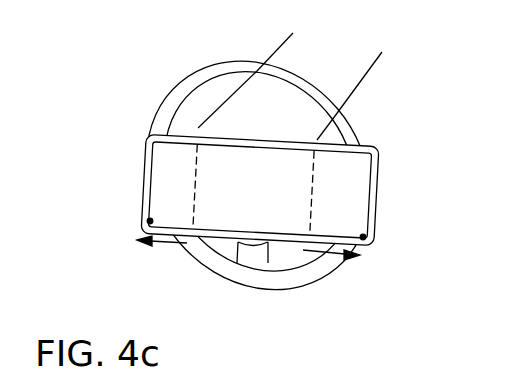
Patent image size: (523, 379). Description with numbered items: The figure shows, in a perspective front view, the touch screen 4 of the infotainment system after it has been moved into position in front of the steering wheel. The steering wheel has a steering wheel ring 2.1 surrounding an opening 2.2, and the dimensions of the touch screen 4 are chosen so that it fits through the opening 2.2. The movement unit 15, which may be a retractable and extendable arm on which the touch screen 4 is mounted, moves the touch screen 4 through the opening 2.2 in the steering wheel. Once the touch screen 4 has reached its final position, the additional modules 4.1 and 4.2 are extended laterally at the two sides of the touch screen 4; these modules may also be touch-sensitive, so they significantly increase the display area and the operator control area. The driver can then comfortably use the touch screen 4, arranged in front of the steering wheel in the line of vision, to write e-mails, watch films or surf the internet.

The steering wheel ring 2.1 is at (298, 82).
The opening 2.2 is at (212, 92).
The movement unit 15 is at (355, 83).
The touch screen 4 is at (400, 198).
The additional module 4.1 is at (363, 240).
The additional module 4.2 is at (147, 223).